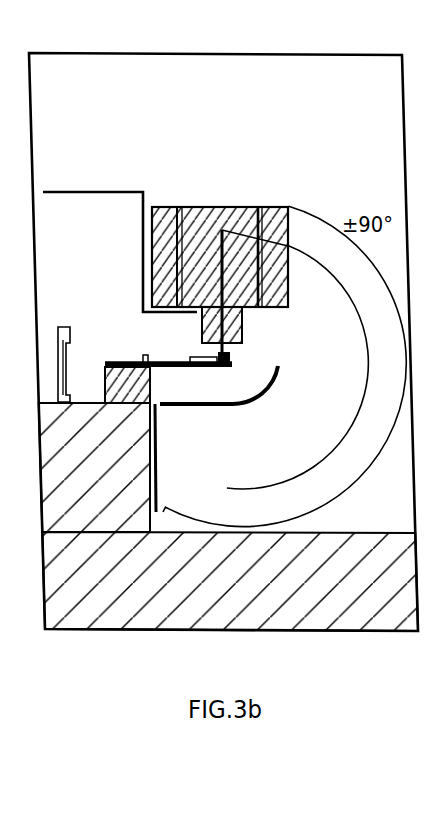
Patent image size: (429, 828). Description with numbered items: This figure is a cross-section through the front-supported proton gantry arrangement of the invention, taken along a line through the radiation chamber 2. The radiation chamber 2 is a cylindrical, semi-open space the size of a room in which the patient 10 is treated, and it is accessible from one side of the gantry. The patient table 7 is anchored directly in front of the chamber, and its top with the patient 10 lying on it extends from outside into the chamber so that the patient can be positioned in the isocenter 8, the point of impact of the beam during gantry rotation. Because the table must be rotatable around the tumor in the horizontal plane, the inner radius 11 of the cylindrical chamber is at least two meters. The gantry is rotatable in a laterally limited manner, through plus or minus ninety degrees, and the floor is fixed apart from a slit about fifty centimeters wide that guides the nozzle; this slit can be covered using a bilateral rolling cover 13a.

The radiation chamber 2 is at (272, 389).
The patient table 7 is at (177, 370).
The isocenter 8 is at (234, 353).
The patient 10 is at (193, 353).
The inner radius 11 is at (366, 348).
The bilateral rolling cover 13a is at (186, 407).